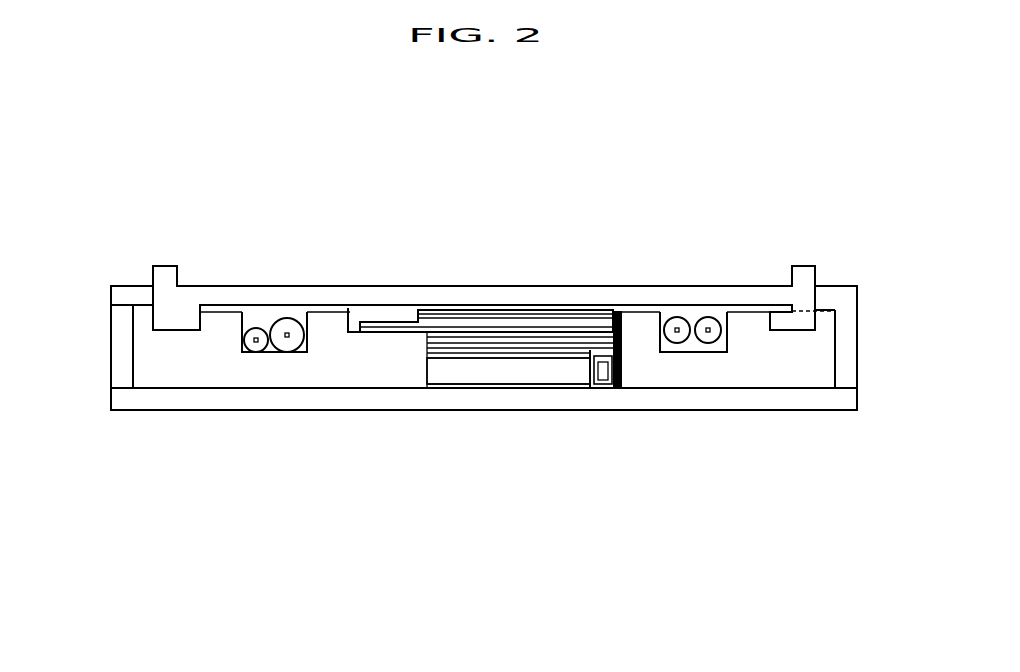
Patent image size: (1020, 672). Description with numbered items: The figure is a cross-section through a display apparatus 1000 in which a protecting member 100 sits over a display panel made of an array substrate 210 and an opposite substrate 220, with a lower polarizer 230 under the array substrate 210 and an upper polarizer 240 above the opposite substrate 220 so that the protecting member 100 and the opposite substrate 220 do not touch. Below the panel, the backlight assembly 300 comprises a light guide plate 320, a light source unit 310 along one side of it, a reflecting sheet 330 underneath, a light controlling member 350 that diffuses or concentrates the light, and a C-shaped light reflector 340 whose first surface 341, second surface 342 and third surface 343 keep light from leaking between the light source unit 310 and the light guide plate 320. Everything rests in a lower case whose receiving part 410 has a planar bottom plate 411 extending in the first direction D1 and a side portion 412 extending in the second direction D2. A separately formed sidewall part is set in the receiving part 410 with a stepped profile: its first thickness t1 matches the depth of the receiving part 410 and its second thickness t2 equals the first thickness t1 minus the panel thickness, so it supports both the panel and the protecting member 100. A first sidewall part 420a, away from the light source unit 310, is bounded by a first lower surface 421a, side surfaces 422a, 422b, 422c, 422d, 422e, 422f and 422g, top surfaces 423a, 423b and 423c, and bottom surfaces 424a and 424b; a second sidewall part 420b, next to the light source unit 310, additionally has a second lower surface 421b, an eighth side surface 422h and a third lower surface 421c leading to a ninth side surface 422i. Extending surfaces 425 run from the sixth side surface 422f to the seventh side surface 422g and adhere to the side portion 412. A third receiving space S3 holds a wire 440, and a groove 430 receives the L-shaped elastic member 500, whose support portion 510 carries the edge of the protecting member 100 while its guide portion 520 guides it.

The display apparatus 1000 is at (490, 140).
The protecting member 100 is at (373, 300).
The array substrate 210 is at (401, 308).
The opposite substrate 220 is at (432, 310).
The lower polarizer 230 is at (448, 357).
The upper polarizer 240 is at (533, 286).
The backlight assembly 300 is at (670, 508).
The light source unit 310 is at (505, 375).
The light guide plate 320 is at (495, 240).
The reflecting sheet 330 is at (476, 388).
The light reflector 340 is at (715, 472).
The first surface 341 is at (600, 380).
The second surface 342 is at (612, 380).
The third surface 343 is at (622, 380).
The light controlling member 350 is at (446, 372).
The receiving part 410 is at (880, 472).
The bottom plate 411 is at (803, 408).
The side portion 412 is at (852, 380).
The first sidewall part 420a is at (128, 391).
The second sidewall part 420b is at (858, 286).
The first lower surface 421a is at (252, 390).
The second lower surface 421b is at (757, 390).
The third lower surface 421c is at (610, 286).
The first side surface 422a is at (425, 362).
The second side surface 422b is at (327, 314).
The third side surface 422c is at (303, 286).
The fourth side surface 422d is at (233, 286).
The fifth side surface 422e is at (188, 286).
The sixth side surface 422f is at (172, 326).
The seventh side surface 422g is at (141, 390).
The eighth side surface 422h is at (655, 286).
The ninth side surface 422i is at (593, 286).
The first top surface 423a is at (350, 334).
The second top surface 423b is at (323, 314).
The third top surface 423c is at (202, 314).
The first bottom surface 424a is at (280, 286).
The second bottom surface 424b is at (150, 283).
The extending surfaces 425 is at (112, 285).
The groove 430 is at (784, 320).
The wire 440 is at (707, 286).
The elastic member 500 is at (842, 203).
The support portion 510 is at (825, 286).
The guide portion 520 is at (800, 273).
The third receiving space S3 is at (252, 318).
The first thickness t1 is at (111, 386).
The second thickness t2 is at (108, 332).
The first direction D1 is at (793, 638).
The second direction D2 is at (793, 638).